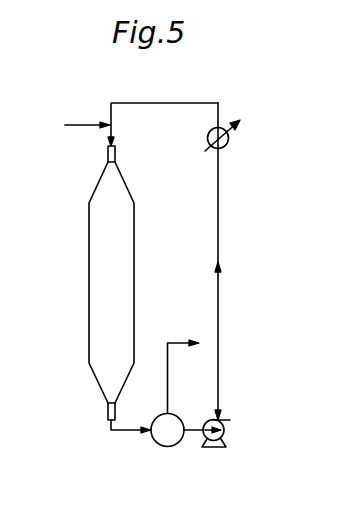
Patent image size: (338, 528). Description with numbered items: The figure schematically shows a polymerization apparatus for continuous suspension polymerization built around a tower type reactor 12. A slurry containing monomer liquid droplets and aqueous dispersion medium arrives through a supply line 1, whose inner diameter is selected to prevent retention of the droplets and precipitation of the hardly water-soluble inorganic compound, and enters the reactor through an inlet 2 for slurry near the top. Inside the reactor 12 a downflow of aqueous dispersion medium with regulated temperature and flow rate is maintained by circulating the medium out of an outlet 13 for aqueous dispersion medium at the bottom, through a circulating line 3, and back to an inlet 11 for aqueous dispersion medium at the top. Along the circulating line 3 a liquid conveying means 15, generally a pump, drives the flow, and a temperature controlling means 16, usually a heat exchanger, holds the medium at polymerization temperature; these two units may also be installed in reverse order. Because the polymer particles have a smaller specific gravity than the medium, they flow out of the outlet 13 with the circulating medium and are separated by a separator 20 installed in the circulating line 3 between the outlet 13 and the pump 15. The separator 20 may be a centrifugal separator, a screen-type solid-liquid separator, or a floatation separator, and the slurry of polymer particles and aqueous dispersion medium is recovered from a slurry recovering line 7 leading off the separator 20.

The supply line 1 is at (82, 127).
The inlet for slurry 2 is at (109, 118).
The circulating line 3 is at (220, 270).
The slurry recovering line 7 is at (172, 340).
The inlet for aqueous dispersion medium 11 is at (116, 149).
The tower type reactor 12 is at (89, 263).
The outlet for aqueous dispersion medium 13 is at (108, 414).
The liquid conveying means 15 is at (224, 428).
The temperature controlling means 16 is at (229, 135).
The separator 20 is at (158, 443).